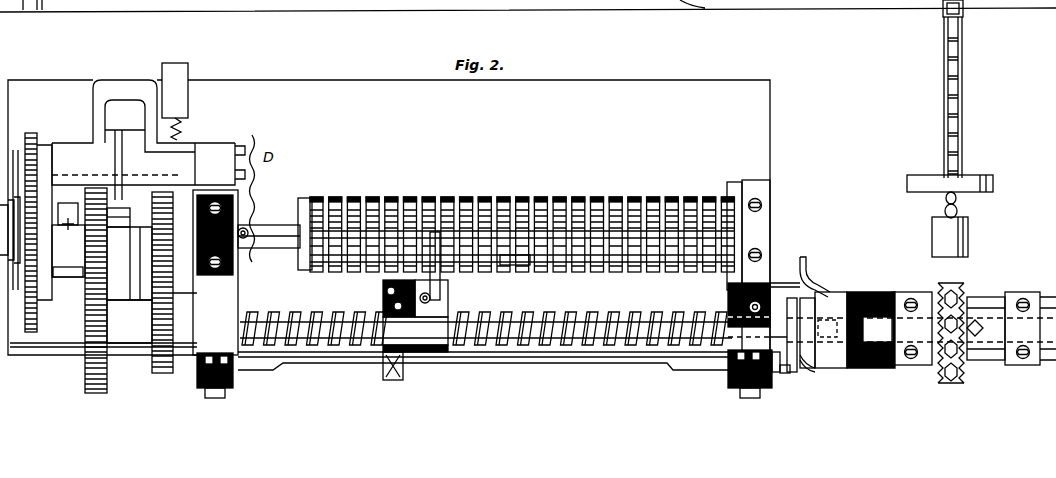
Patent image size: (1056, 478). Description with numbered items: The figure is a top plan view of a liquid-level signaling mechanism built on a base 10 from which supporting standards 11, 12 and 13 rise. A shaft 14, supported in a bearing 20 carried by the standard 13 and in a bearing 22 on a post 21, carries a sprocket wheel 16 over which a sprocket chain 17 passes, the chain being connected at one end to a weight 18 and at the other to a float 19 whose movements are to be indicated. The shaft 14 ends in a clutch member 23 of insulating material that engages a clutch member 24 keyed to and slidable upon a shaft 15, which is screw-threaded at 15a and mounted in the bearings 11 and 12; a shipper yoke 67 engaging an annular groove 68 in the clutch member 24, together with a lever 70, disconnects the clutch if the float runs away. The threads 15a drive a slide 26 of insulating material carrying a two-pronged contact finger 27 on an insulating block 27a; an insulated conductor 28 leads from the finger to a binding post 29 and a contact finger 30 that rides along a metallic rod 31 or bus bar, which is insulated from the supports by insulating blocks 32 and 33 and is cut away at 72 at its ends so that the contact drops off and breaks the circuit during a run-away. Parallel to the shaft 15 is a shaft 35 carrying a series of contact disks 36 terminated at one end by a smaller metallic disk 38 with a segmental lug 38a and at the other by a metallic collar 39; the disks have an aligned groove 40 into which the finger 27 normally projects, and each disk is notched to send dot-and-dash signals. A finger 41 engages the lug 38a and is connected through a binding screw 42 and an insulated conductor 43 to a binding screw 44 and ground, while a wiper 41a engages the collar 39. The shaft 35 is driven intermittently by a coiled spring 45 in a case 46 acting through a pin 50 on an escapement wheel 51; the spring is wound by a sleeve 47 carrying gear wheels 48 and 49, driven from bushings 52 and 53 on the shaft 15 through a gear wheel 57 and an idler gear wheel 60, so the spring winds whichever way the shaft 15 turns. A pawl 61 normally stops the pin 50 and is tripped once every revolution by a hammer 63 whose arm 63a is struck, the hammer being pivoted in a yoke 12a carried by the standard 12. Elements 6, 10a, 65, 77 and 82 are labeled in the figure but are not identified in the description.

The machine part (upper figure) 6 is at (373, 27).
The base 10 is at (361, 82).
The frame portion 10a is at (700, 0).
The supporting standard 11 is at (748, 187).
The supporting standard 12 is at (232, 292).
The supporting yoke 12a is at (115, 85).
The supporting standard 13 is at (1045, 297).
The shaft 14 is at (1050, 328).
The screw-threaded shaft 15 is at (607, 320).
The screw-threads 15a is at (505, 318).
The sprocket wheel 16 is at (940, 380).
The sprocket chain 17 is at (963, 100).
The weight 18 is at (970, 221).
The float 19 is at (992, 169).
The bearing 20 is at (1010, 292).
The post 21 is at (1012, 362).
The bearing 22 is at (903, 360).
The clutch member 23 is at (867, 297).
The clutch member 24 is at (840, 292).
The slide 26 is at (448, 294).
The contact finger 27 is at (435, 250).
The insulating block 27a is at (382, 297).
The insulated conductor 28 is at (428, 355).
The binding post 29 is at (418, 352).
The contact finger 30 is at (388, 380).
The metallic rod 31 is at (324, 368).
The insulating block 32 is at (197, 388).
The insulating block 33 is at (728, 387).
The shaft 35 is at (265, 224).
The contact disks 36 is at (352, 200).
The metallic disk 38 is at (733, 212).
The segmental-shaped lug 38a is at (735, 233).
The metallic collar 39 is at (303, 198).
The groove 40 is at (633, 250).
The finger 41 is at (733, 250).
The wiper 41a is at (270, 238).
The binding screw 42 is at (730, 295).
The insulated conductor 43 is at (780, 373).
The binding screw 44 is at (785, 372).
The coiled spring 45 is at (66, 226).
The case 46 is at (70, 279).
The sleeve 47 is at (129, 263).
The gear wheel 48 is at (160, 215).
The gear wheel 49 is at (110, 217).
The pin 50 is at (160, 373).
The escapement wheel 51 is at (38, 148).
The bushing 52 is at (140, 327).
The bushing 53 is at (115, 313).
The gear wheel 57 is at (85, 386).
The idler gear wheel 60 is at (173, 289).
The pawl 61 is at (47, 197).
The hammer 63 is at (188, 68).
The arm 63a is at (186, 129).
The gear 65 is at (30, 133).
The shipper yoke 67 is at (818, 363).
The annular groove 68 is at (833, 337).
The lever 70 is at (808, 263).
The cut-away portion 72 is at (268, 373).
The clamp 77 is at (510, 268).
The bushing 82 is at (131, 262).